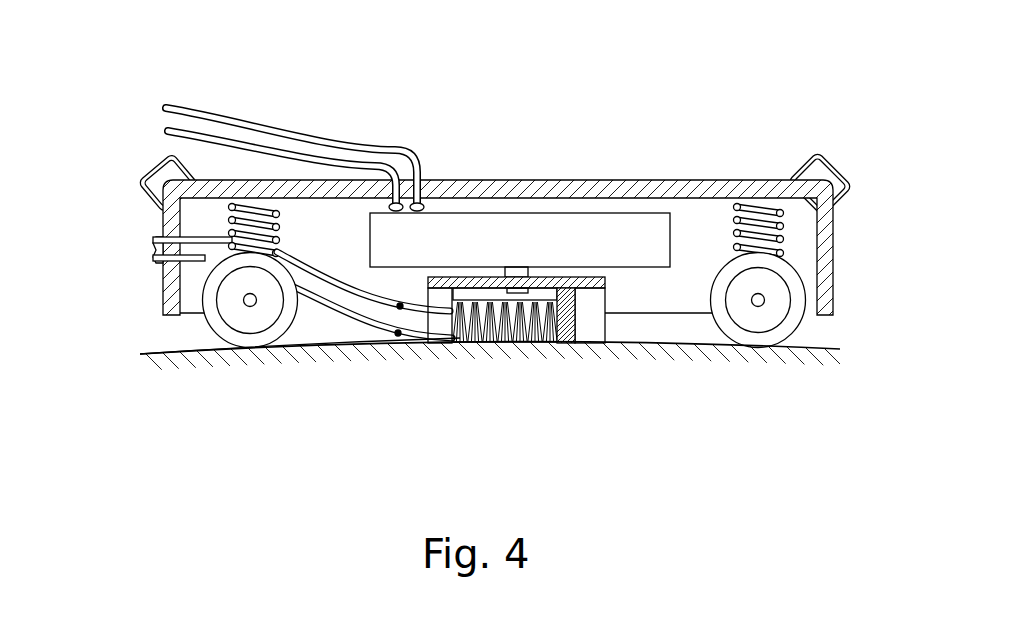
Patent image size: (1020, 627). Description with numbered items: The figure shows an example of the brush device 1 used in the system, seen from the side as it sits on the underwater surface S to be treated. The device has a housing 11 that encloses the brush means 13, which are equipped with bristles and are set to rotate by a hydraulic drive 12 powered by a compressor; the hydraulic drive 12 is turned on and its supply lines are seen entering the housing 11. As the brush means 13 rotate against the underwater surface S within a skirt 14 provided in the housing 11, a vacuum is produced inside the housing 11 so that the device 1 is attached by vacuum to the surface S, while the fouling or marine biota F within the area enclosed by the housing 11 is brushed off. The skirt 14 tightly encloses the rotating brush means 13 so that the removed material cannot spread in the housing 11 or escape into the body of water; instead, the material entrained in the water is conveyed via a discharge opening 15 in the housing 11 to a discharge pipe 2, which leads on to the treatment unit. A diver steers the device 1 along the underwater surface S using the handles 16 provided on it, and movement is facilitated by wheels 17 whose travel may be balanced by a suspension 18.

The brush device 1 is at (596, 126).
The discharge pipe 2 is at (150, 252).
The housing 11 is at (556, 360).
The hydraulic drive 12 is at (238, 119).
The brush means 13 is at (500, 355).
The skirt 14 is at (567, 356).
The discharge opening 15 is at (440, 318).
The handles 16 is at (839, 162).
The wheels 17 is at (294, 325).
The suspension 18 is at (285, 238).
The fouling or marine biota F is at (182, 346).
The underwater surface S is at (154, 352).